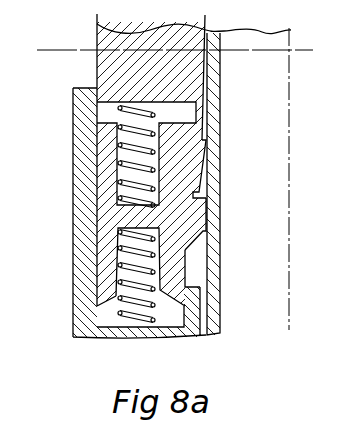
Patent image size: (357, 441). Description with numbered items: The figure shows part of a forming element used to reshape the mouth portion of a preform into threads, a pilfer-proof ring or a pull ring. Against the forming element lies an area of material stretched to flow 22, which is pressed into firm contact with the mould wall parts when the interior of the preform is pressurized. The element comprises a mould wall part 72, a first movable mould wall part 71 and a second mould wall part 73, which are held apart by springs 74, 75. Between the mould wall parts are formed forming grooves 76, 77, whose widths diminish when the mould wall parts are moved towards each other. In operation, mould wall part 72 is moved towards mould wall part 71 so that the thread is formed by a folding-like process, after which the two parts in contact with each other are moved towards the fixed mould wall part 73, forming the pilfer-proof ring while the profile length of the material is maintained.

The mould wall part 72 is at (200, 75).
The forming groove 77 is at (200, 188).
The area of material stretched to flow 22 is at (207, 215).
The first movable mould wall part 71 is at (203, 228).
The forming groove 76 is at (193, 255).
The second movable mould wall part 73 is at (193, 305).
The spring 75 is at (118, 143).
The spring 74 is at (118, 245).